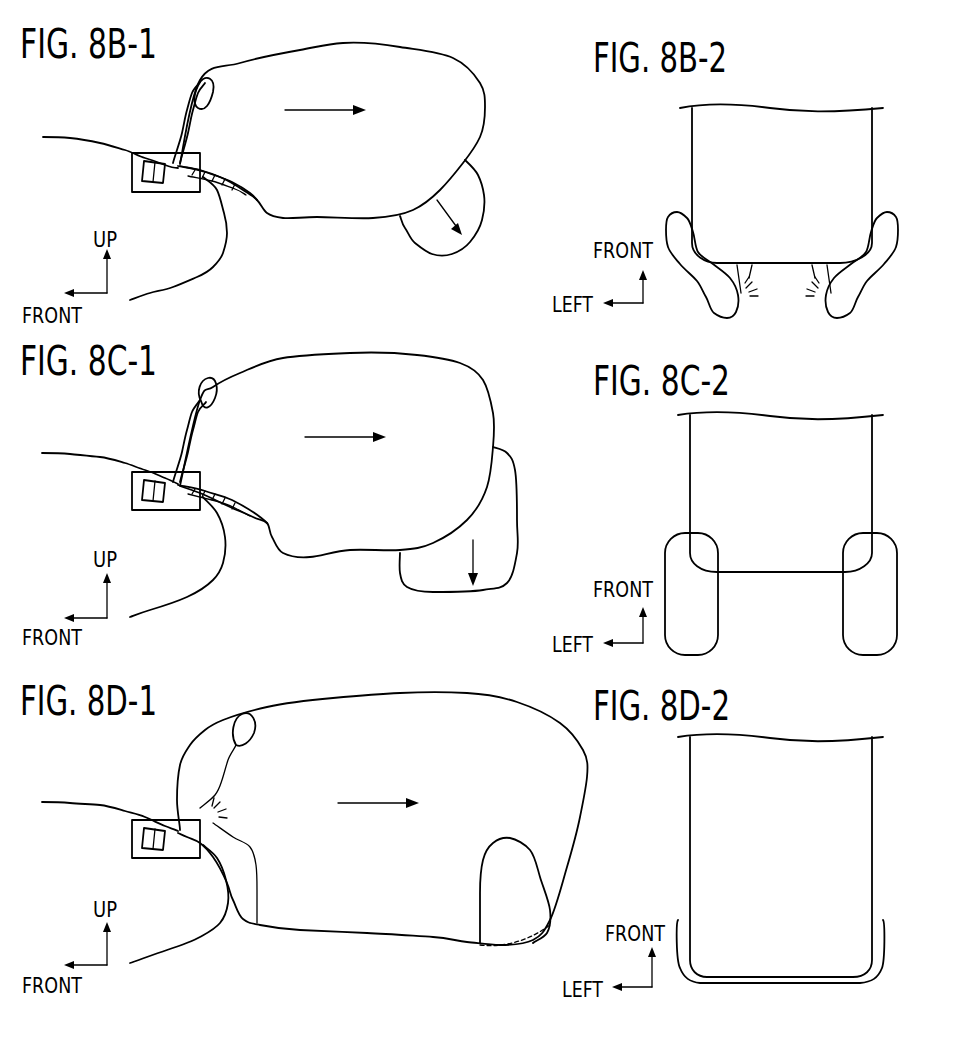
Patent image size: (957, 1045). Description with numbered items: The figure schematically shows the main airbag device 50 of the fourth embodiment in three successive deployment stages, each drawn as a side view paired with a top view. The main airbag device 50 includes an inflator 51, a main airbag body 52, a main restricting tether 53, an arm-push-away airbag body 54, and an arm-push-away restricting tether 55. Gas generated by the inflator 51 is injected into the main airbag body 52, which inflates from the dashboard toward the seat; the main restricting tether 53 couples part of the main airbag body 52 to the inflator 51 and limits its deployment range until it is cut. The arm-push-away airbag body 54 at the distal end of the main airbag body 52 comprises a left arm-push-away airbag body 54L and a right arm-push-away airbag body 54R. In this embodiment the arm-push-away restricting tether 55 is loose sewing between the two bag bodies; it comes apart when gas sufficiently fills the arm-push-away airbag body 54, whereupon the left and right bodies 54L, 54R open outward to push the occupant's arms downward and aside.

In FIG. 8B-1, the main airbag device 50 is at (168, 193).
In FIG. 8C-1, the main airbag device 50 is at (168, 512).
In FIG. 8D-1, the main airbag device 50 is at (168, 860).
In FIG. 8B-1, the inflator 51 is at (152, 160).
In FIG. 8C-1, the inflator 51 is at (152, 479).
In FIG. 8D-1, the inflator 51 is at (152, 826).
In FIG. 8B-1, the main airbag body 52 is at (346, 42).
In FIG. 8B-2, the main airbag body 52 is at (692, 146).
In FIG. 8C-1, the main airbag body 52 is at (346, 354).
In FIG. 8C-2, the main airbag body 52 is at (690, 470).
In FIG. 8D-1, the main airbag body 52 is at (374, 696).
In FIG. 8D-2, the main airbag body 52 is at (690, 823).
In FIG. 8B-1, the main restricting tether 53 is at (203, 78).
In FIG. 8C-1, the main restricting tether 53 is at (207, 380).
In FIG. 8D-1, the main restricting tether 53 is at (248, 718).
In FIG. 8B-1, the arm-push-away airbag body 54 is at (484, 222).
In FIG. 8C-1, the arm-push-away airbag body 54 is at (520, 528).
In FIG. 8D-1, the arm-push-away airbag body 54 is at (528, 890).
In FIG. 8B-2, the left arm-push-away airbag body 54L is at (682, 278).
In FIG. 8C-2, the left arm-push-away airbag body 54L is at (718, 591).
In FIG. 8D-2, the left arm-push-away airbag body 54L is at (690, 993).
In FIG. 8B-2, the right arm-push-away airbag body 54R is at (881, 278).
In FIG. 8C-2, the right arm-push-away airbag body 54R is at (843, 627).
In FIG. 8D-2, the right arm-push-away airbag body 54R is at (875, 993).
In FIG. 8B-2, the arm-push-away restricting tether 55 is at (745, 298).